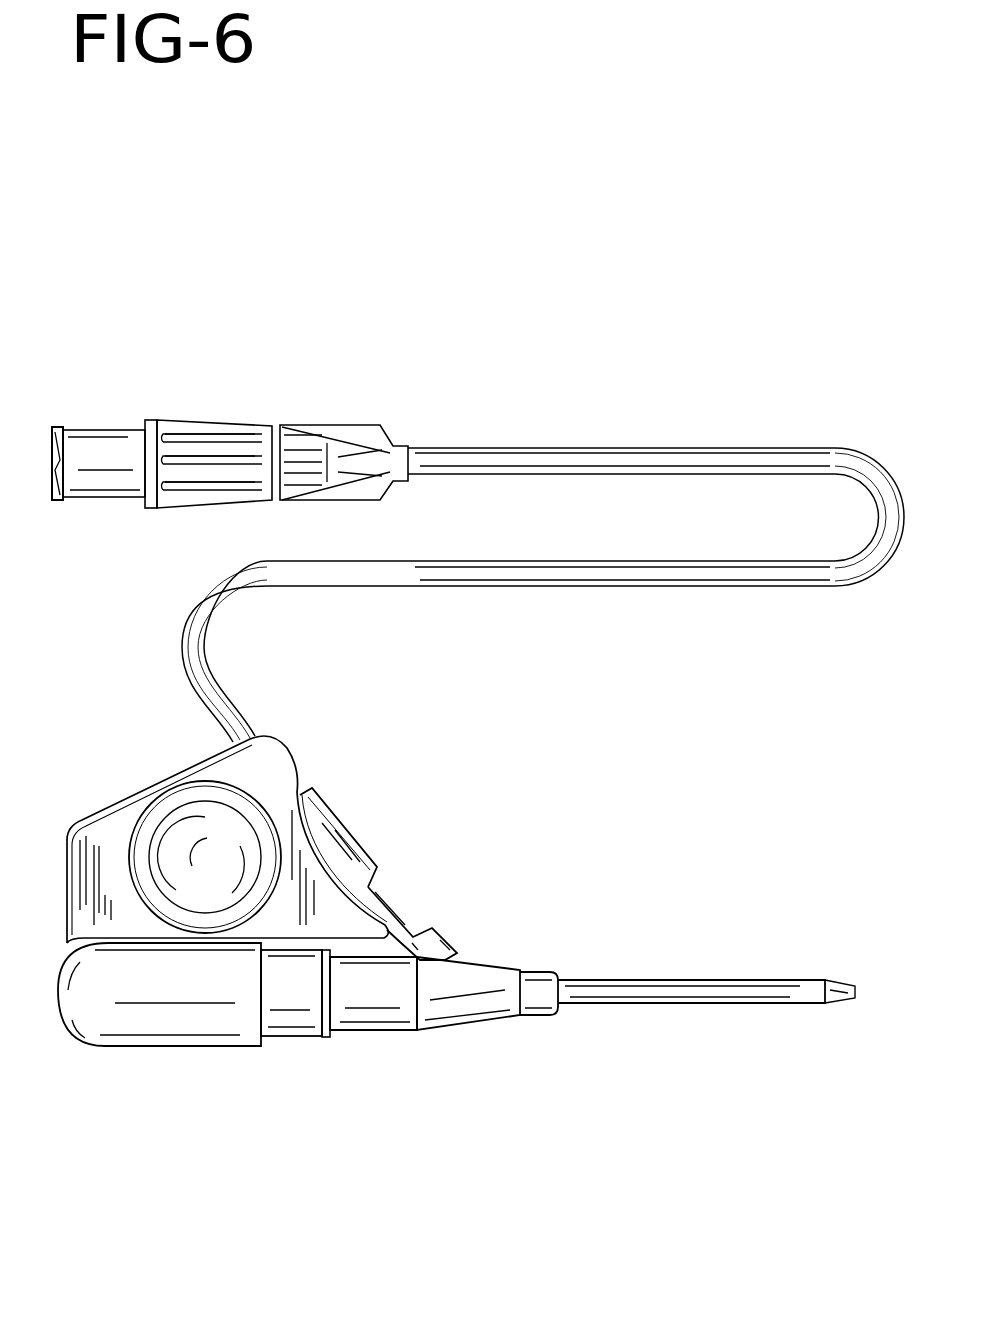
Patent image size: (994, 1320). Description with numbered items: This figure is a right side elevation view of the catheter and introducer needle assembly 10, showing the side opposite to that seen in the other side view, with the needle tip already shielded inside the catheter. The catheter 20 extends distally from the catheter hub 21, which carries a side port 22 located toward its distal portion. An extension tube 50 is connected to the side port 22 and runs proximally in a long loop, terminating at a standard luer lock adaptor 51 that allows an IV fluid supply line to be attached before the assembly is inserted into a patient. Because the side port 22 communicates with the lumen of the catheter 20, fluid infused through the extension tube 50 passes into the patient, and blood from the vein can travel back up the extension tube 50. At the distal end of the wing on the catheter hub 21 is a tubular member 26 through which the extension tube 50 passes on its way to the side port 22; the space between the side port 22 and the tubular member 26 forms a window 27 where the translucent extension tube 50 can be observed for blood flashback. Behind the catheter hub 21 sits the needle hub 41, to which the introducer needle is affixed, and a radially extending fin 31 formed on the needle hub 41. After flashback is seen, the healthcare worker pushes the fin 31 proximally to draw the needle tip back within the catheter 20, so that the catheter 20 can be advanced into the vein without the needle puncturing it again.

The catheter and introducer needle assembly 10 is at (615, 828).
The catheter 20 is at (692, 1004).
The catheter hub 21 is at (368, 1037).
The side port 22 is at (448, 942).
The tubular member 26 is at (347, 822).
The window 27 is at (413, 892).
The fin 31 is at (93, 840).
The needle hub 41 is at (173, 1047).
The extension tube 50 is at (552, 587).
The luer lock adaptor 51 is at (54, 427).